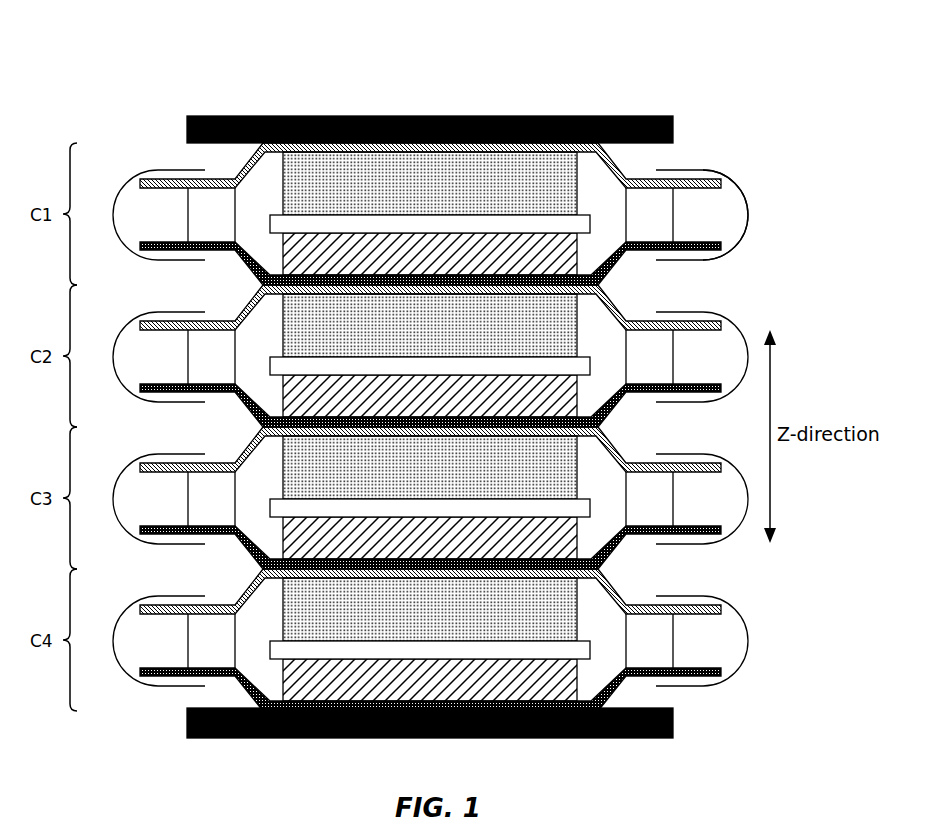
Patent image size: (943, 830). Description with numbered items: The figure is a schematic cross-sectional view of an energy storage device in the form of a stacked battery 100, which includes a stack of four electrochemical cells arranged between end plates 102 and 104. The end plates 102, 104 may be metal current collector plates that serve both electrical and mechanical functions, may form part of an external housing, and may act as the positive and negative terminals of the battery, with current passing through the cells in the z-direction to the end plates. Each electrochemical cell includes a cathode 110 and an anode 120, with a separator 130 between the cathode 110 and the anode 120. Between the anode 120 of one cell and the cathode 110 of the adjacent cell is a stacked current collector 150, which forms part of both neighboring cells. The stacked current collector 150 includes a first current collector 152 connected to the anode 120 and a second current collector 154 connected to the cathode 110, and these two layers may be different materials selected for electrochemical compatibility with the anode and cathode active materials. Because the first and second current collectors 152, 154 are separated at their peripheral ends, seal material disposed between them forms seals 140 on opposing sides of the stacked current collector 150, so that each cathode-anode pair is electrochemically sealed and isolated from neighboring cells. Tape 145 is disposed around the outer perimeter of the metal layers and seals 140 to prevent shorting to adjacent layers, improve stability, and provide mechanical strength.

The stacked battery 100 is at (292, 65).
The end plate 102 is at (542, 116).
The end plate 104 is at (300, 738).
The cathode 110 is at (283, 178).
The anode 120 is at (283, 243).
The separator 130 is at (270, 653).
The seal 140 is at (673, 222).
The tape 145 is at (700, 170).
The stacked current collector 150 is at (798, 188).
The first current collector 152 is at (745, 217).
The second current collector 154 is at (721, 323).